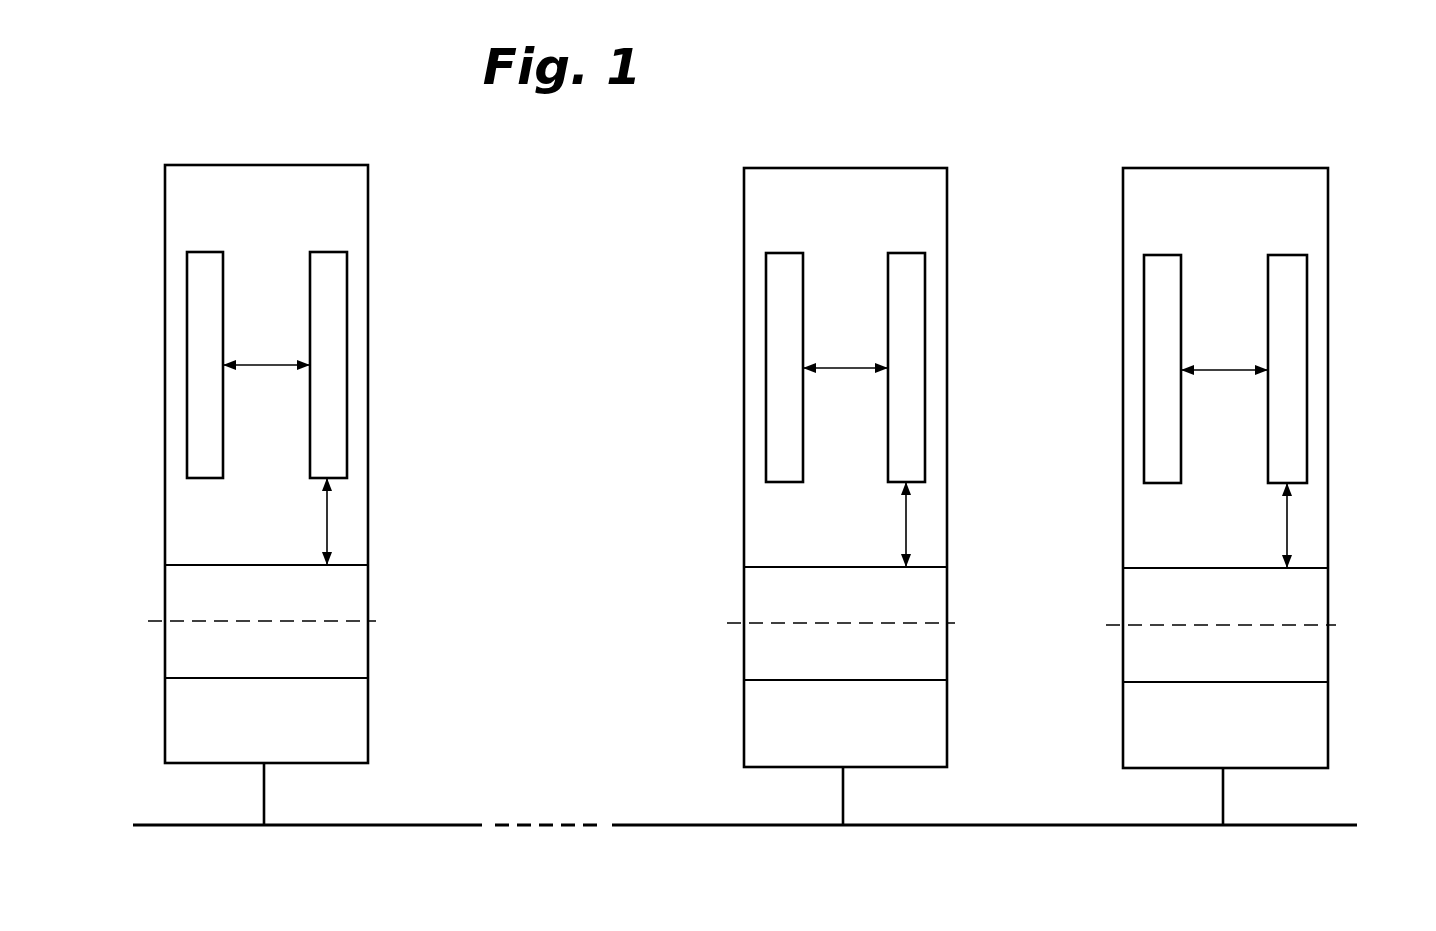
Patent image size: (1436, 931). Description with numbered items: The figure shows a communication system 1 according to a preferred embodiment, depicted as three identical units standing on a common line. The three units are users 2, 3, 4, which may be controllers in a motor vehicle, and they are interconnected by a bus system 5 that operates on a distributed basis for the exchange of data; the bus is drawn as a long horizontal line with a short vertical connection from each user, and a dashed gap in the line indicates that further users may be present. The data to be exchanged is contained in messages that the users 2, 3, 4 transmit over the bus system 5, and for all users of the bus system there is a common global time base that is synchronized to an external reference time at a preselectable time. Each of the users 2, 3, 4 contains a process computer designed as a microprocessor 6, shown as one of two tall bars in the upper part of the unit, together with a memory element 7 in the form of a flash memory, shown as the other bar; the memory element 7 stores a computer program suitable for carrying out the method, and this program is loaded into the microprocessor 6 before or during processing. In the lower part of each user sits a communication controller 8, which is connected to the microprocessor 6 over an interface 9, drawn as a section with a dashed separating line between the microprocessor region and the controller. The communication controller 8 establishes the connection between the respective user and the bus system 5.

The communication system 1 is at (1078, 138).
The user 2 is at (327, 165).
The user 3 is at (905, 168).
The user 4 is at (1287, 168).
The bus system 5 is at (665, 825).
The microprocessor 6 is at (339, 309).
The memory element 7 is at (195, 309).
The communication controller 8 is at (354, 731).
The interface 9 is at (354, 598).